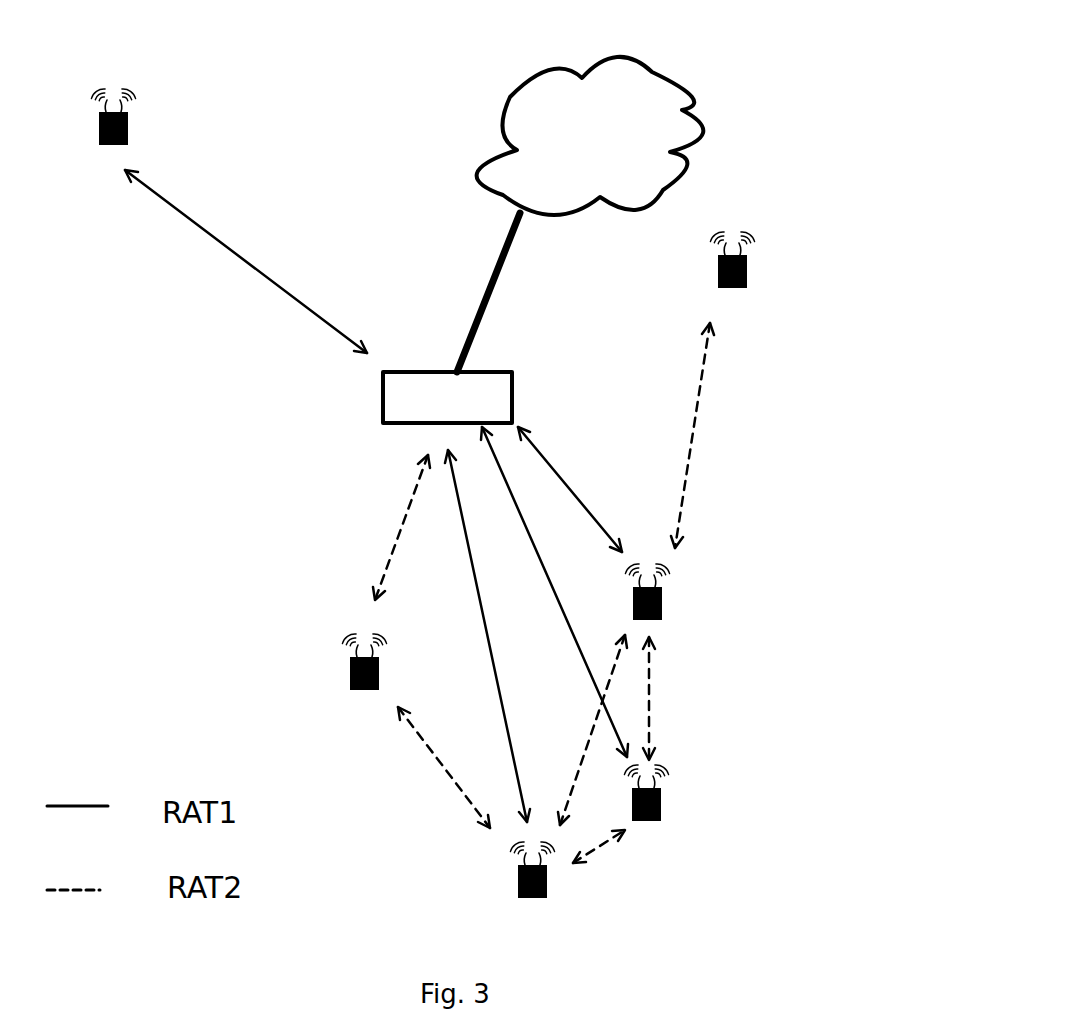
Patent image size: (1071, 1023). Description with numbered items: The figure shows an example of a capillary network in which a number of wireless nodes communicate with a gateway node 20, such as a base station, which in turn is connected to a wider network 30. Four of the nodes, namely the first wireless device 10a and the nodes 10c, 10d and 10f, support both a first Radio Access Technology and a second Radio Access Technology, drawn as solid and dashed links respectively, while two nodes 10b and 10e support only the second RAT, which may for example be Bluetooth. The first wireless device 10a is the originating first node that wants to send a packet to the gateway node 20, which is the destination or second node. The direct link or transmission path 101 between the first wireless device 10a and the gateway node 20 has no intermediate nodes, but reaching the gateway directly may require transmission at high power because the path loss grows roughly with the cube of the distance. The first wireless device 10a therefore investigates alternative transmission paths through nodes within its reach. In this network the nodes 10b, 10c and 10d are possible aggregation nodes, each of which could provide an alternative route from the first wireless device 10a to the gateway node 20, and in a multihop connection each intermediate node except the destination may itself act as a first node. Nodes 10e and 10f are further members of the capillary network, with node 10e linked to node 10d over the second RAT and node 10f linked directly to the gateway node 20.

The network / cloud 30 is at (652, 67).
The gateway node 20 is at (432, 411).
The direct link 101 is at (502, 700).
The first wireless device 10a is at (518, 880).
The node 10b is at (350, 672).
The node 10c is at (662, 805).
The node 10d is at (663, 603).
The node 10e is at (747, 272).
The node 10f is at (128, 130).